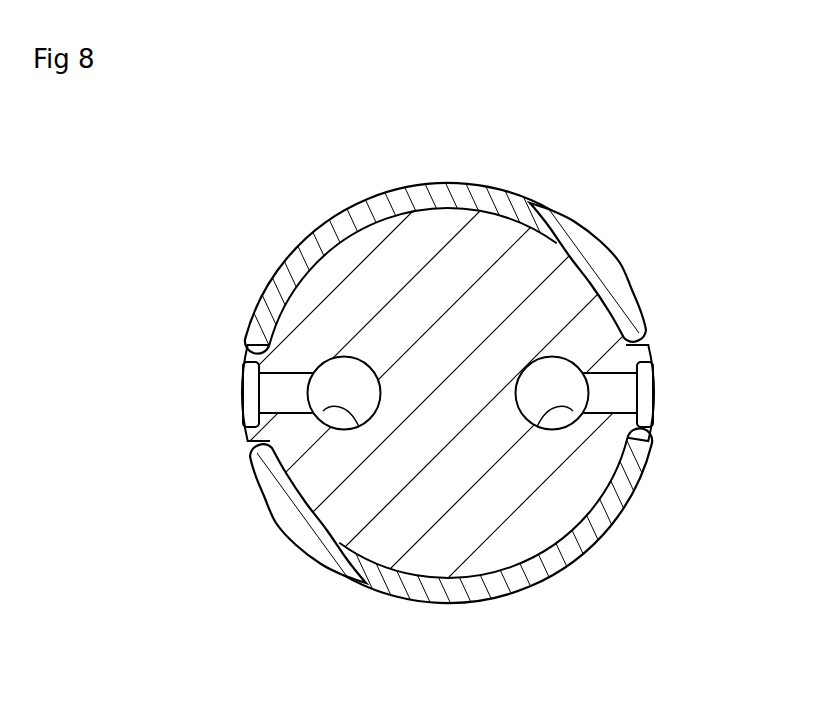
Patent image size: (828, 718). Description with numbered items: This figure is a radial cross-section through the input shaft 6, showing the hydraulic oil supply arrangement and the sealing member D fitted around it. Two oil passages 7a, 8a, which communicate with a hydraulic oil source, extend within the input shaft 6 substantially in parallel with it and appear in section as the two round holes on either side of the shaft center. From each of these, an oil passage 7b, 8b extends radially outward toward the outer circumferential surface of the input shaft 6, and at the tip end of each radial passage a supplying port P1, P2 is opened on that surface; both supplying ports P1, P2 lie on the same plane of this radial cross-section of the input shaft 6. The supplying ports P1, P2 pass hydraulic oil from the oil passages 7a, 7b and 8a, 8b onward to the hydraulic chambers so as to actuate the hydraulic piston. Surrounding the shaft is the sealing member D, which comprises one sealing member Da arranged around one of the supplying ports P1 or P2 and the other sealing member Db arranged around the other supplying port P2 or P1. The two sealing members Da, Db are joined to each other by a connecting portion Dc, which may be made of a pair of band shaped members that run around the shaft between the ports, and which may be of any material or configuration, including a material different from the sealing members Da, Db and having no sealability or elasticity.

The input shaft 6 is at (483, 230).
The oil passage 7a is at (323, 411).
The oil passage 7b is at (268, 413).
The oil passage 8a is at (573, 411).
The oil passage 8b is at (626, 412).
The sealing member D is at (578, 230).
The sealing member Da is at (252, 330).
The sealing member Db is at (648, 328).
The connecting portion Dc is at (371, 213).
The supplying port P1 is at (253, 370).
The supplying port P2 is at (643, 370).